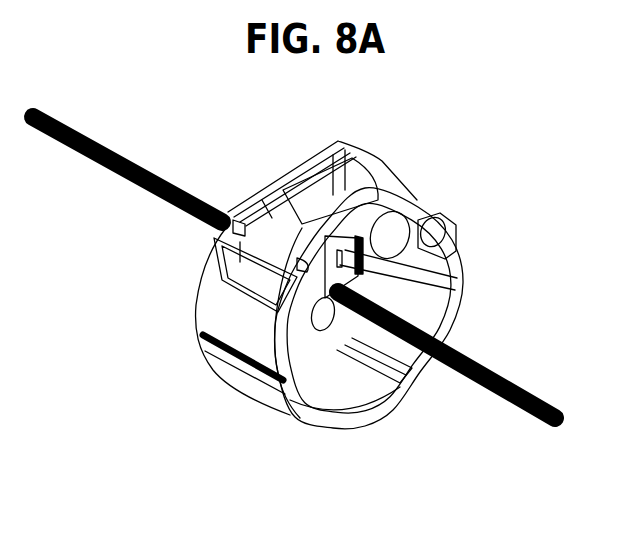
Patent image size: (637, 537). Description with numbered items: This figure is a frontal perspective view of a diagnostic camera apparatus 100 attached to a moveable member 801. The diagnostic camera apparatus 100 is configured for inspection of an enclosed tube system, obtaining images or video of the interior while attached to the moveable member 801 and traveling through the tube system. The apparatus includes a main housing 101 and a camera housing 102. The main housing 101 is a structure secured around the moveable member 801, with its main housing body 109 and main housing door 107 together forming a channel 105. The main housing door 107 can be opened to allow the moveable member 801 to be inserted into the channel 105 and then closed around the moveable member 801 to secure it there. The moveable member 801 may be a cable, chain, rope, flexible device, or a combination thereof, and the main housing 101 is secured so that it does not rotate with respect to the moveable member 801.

The diagnostic camera apparatus 100 is at (536, 170).
The main housing 101 is at (420, 372).
The camera housing 102 is at (380, 190).
The channel 105 is at (355, 335).
The main housing door 107 is at (432, 290).
The main housing body 109 is at (338, 405).
The moveable member 801 is at (527, 385).